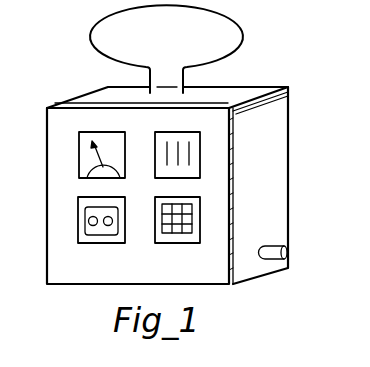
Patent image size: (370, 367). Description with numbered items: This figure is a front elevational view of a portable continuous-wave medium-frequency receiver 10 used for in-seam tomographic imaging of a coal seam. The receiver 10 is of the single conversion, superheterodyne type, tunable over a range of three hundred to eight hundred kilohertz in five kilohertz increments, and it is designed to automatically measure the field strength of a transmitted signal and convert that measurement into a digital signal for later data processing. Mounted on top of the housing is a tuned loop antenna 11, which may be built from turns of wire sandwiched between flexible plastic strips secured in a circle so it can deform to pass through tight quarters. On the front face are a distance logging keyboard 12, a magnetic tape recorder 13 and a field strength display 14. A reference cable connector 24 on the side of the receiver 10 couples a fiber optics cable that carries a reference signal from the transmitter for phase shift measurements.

The receiver 10 is at (303, 143).
The tuned loop antenna 11 is at (243, 38).
The distance logging keyboard 12 is at (200, 219).
The magnetic tape recorder 13 is at (78, 223).
The field strength display 14 is at (79, 160).
The reference cable connector 24 is at (265, 260).